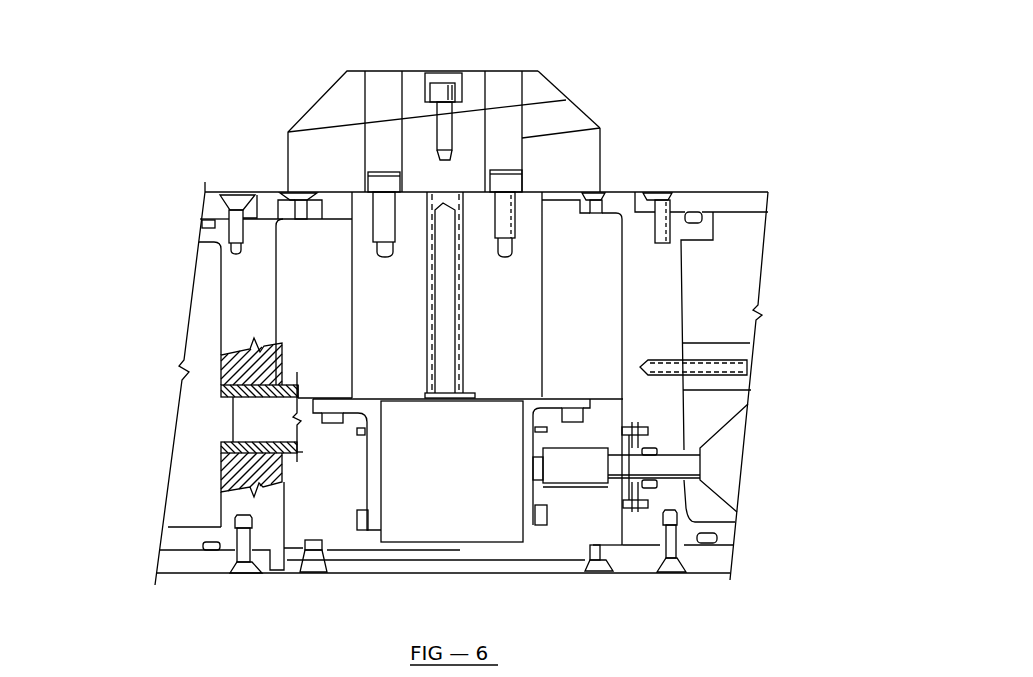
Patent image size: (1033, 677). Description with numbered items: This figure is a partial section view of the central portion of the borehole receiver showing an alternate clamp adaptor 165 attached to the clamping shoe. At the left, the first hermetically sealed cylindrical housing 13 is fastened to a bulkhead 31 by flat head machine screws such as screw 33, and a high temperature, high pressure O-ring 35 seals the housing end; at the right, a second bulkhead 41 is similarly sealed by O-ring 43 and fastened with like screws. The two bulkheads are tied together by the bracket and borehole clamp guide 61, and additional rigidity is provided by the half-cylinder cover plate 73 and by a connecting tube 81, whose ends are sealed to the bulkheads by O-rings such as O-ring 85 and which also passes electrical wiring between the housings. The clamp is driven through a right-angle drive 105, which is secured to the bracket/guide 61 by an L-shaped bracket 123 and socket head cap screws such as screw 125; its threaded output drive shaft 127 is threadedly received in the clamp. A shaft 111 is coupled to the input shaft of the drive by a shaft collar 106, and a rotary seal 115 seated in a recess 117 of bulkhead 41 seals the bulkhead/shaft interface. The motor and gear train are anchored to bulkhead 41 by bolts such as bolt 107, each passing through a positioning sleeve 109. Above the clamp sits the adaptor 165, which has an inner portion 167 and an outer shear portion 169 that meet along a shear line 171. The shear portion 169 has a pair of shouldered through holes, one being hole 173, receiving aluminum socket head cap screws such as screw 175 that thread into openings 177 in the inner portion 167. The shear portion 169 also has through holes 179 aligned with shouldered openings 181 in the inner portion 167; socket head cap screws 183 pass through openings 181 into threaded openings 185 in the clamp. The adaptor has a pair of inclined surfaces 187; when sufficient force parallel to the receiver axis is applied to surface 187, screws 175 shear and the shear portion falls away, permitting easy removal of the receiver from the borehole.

The first hermetically sealed cylindrical housing 13 is at (198, 582).
The bulkhead 31 is at (240, 321).
The flat head machine screw 33 is at (667, 191).
The O-ring 35 is at (203, 223).
The bulkhead 41 is at (667, 270).
The O-ring 43 is at (695, 213).
The bracket and borehole clamp guide 61 is at (300, 277).
The half-cylinder cover plate 73 is at (385, 562).
The connecting tube 81 is at (233, 442).
The O-ring 85 is at (221, 388).
The right-angle drive 105 is at (468, 464).
The shaft collar 106 is at (570, 470).
The bolt 107 is at (747, 365).
The positioning sleeve 109 is at (738, 347).
The shaft 111 is at (727, 472).
The rotary seal 115 is at (653, 448).
The recess 117 is at (657, 452).
The L-shaped bracket 123 is at (535, 523).
The socket head cap screw 125 is at (357, 435).
The threaded output drive shaft 127 is at (445, 345).
The alternate clamp adaptor 165 is at (587, 114).
The inner portion 167 is at (595, 157).
The shear portion 169 is at (540, 85).
The shear line 171 is at (559, 96).
The shouldered through hole 173 is at (428, 73).
The aluminum socket head cap screw 175 is at (462, 76).
The threaded opening 177 is at (438, 155).
The through hole 179 is at (365, 92).
The shouldered opening 181 is at (400, 139).
The socket head cap screw 183 is at (380, 180).
The threaded opening 185 is at (517, 225).
The inclined surface 187 is at (300, 121).